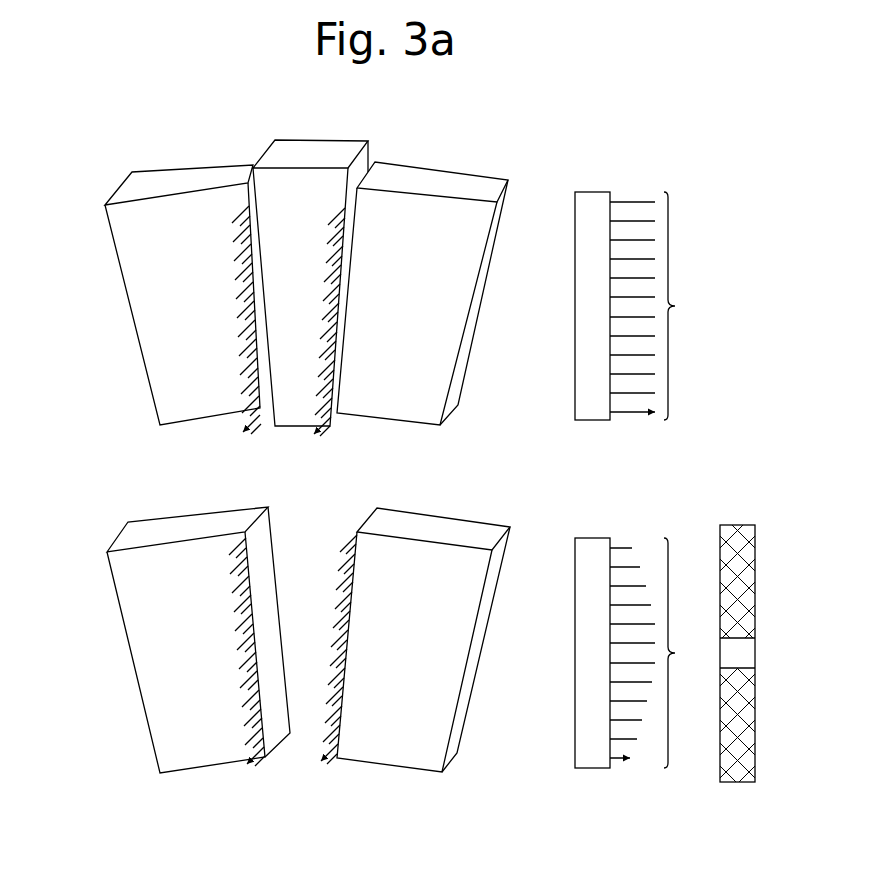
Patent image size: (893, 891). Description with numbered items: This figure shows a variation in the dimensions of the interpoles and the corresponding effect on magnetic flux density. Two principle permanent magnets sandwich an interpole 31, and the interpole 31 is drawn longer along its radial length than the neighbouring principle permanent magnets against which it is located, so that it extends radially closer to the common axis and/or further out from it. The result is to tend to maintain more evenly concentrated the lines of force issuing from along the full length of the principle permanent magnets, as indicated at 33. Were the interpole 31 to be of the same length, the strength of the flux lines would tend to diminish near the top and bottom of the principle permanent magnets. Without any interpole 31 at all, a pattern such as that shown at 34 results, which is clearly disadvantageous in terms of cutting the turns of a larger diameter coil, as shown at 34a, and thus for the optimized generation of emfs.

The interpole 31 is at (290, 152).
The lines of force 33 is at (242, 303).
The flux pattern without interpole 34 is at (242, 652).
The turns of a larger diameter coil 34a is at (733, 525).